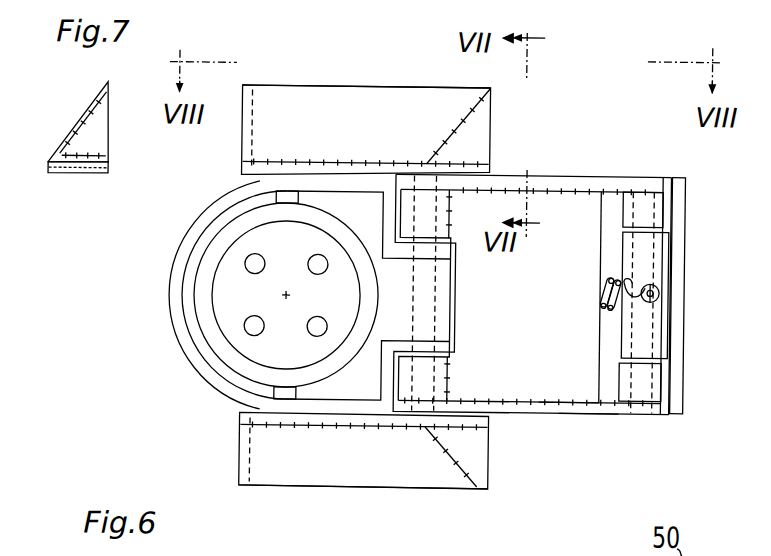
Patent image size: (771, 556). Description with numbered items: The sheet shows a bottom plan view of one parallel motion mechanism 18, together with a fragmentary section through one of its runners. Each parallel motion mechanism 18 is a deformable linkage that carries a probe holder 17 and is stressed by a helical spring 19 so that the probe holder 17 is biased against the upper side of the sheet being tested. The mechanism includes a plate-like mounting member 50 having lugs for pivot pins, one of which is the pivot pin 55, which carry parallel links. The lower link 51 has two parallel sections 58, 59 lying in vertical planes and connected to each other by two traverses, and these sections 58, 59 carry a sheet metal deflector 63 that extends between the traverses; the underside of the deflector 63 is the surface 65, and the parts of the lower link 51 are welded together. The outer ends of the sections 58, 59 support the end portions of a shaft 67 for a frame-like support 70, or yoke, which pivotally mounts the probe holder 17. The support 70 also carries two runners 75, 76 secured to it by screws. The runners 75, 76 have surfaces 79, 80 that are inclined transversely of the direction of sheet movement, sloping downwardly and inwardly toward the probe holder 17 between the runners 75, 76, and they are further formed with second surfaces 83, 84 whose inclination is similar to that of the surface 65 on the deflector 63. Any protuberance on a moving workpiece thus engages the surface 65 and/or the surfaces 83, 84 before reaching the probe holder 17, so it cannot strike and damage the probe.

In FIG. 6, the probe holder 17 is at (178, 353).
In FIG. 6, the parallel motion mechanism 18 is at (575, 173).
In FIG. 6, the helical spring 19 is at (610, 308).
In FIG. 6, the mounting member 50 is at (676, 407).
In FIG. 6, the lower link 51 is at (583, 417).
In FIG. 6, the pivot pin 55 is at (655, 328).
In FIG. 6, the section of lower link 58 is at (609, 408).
In FIG. 6, the section of lower link 59 is at (615, 178).
In FIG. 6, the deflector 63 is at (548, 388).
In FIG. 6, the underside of deflector 65 is at (526, 306).
In FIG. 6, the shaft 67 is at (435, 330).
In FIG. 6, the support 70 is at (175, 271).
In FIG. 6, the runner 75 is at (309, 491).
In FIG. 7, the runner 76 is at (62, 179).
In FIG. 6, the runner 76 is at (316, 86).
In FIG. 6, the inclined surface 79 is at (383, 480).
In FIG. 7, the inclined surface 80 is at (70, 126).
In FIG. 6, the inclined surface 80 is at (378, 138).
In FIG. 6, the second surface 83 is at (487, 466).
In FIG. 7, the second surface 84 is at (91, 144).
In FIG. 6, the second surface 84 is at (481, 156).